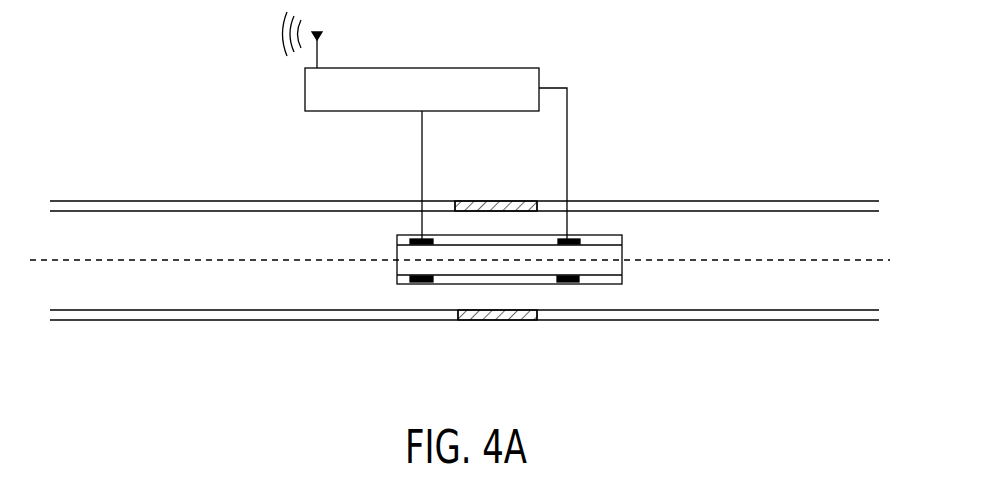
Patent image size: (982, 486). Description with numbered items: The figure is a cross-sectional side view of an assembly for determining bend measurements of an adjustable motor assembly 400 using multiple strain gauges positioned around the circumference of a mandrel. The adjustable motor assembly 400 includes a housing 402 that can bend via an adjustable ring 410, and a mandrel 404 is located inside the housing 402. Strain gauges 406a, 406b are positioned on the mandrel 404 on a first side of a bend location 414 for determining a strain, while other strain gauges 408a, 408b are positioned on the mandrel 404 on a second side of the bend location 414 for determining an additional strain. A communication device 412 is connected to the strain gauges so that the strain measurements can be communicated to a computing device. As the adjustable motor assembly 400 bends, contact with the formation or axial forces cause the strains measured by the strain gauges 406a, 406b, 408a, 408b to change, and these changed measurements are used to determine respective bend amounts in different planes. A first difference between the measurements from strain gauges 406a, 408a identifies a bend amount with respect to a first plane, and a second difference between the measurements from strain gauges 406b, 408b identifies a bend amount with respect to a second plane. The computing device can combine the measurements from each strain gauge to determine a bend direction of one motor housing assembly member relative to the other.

The adjustable motor assembly 400 is at (118, 168).
The housing 402 is at (287, 197).
The mandrel 404 is at (429, 286).
The strain gauge 406a is at (415, 285).
The strain gauge 406b is at (413, 232).
The strain gauge 408a is at (573, 285).
The strain gauge 408b is at (577, 232).
The adjustable ring 410 is at (495, 197).
The communication device 412 is at (427, 67).
The bend location 414 is at (497, 323).